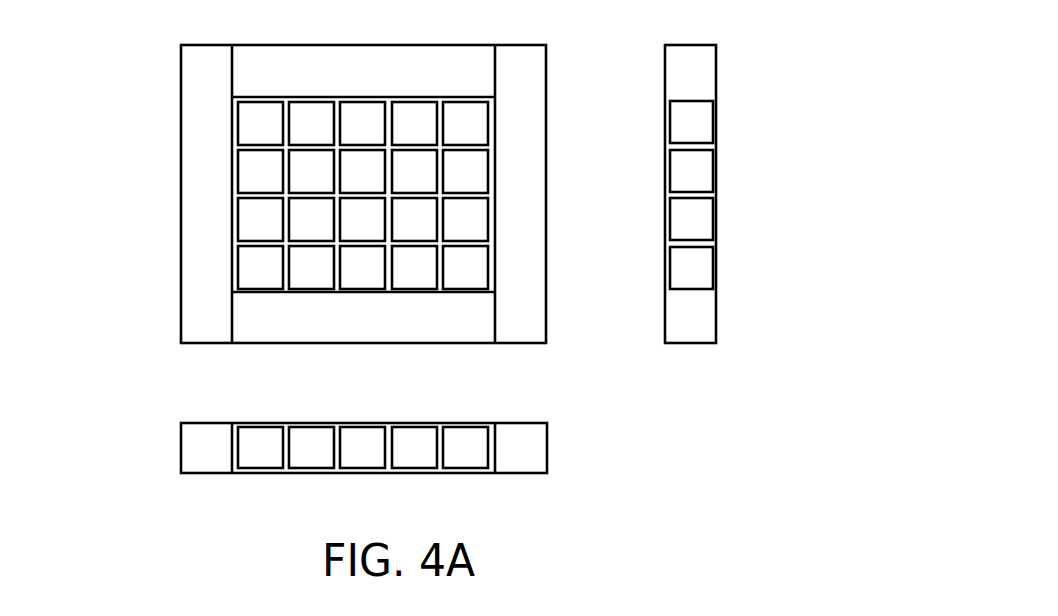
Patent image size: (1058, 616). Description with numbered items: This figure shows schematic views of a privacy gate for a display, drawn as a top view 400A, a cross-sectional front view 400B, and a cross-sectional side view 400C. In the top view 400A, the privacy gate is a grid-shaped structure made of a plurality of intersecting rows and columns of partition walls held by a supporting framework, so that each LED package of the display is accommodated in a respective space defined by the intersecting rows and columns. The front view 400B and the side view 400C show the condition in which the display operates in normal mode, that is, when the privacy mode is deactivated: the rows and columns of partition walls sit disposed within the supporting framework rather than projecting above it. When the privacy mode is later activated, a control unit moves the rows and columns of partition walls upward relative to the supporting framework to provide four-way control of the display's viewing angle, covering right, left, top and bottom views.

The top view 400A is at (127, 196).
The cross-sectional front view 400B is at (142, 462).
The cross-sectional side view 400C is at (825, 217).